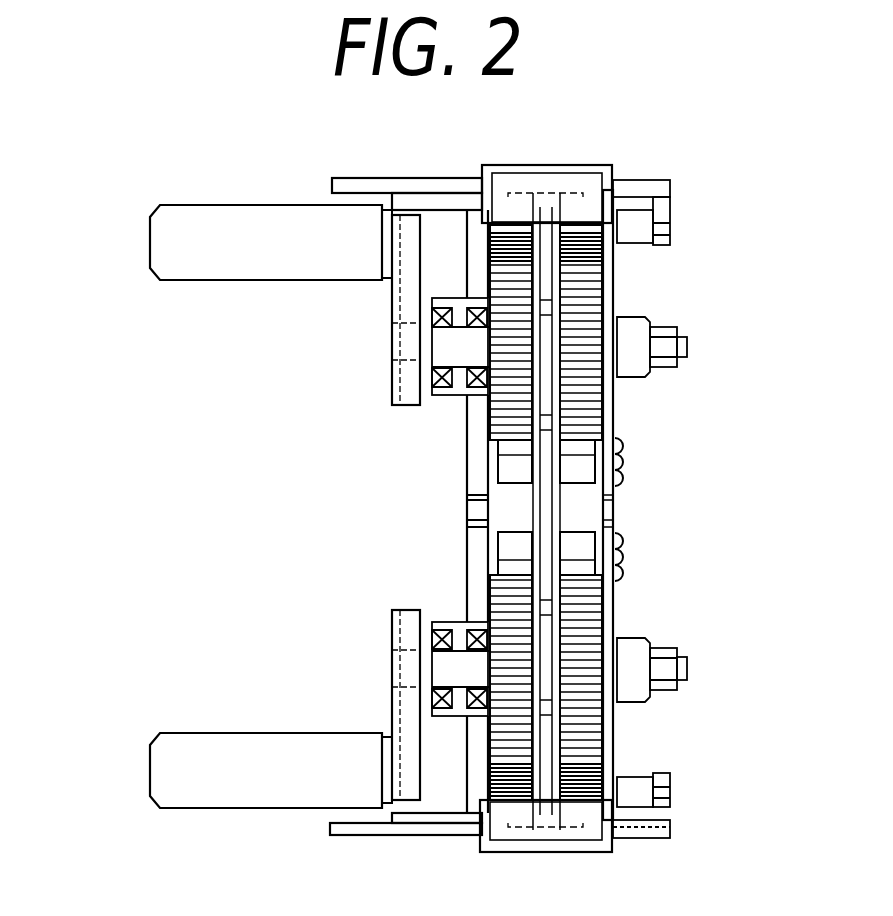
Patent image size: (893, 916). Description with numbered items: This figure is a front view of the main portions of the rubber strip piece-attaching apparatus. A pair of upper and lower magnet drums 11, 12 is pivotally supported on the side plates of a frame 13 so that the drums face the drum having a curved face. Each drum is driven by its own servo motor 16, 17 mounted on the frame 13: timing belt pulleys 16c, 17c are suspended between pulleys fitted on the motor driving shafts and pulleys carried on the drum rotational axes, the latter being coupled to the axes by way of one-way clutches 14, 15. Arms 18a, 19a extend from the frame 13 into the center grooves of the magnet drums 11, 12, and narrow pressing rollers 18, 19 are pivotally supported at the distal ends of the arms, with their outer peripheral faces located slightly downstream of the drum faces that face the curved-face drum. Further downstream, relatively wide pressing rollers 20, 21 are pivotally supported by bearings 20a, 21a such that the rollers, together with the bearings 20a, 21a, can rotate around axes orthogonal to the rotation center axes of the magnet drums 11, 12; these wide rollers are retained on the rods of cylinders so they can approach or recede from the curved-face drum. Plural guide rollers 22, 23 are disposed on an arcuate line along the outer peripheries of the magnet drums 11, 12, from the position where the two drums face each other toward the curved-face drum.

The upper magnet drum 11 is at (626, 332).
The lower magnet drum 12 is at (621, 687).
The frame 13 is at (620, 505).
The one-way clutch 14 is at (398, 383).
The one-way clutch 15 is at (400, 640).
The servo motor 16 is at (150, 243).
The timing belt pulley 16c is at (400, 298).
The servo motor 17 is at (150, 760).
The timing belt pulley 17c is at (400, 715).
The pressing roller 18 is at (560, 353).
The arm 18a is at (602, 275).
The pressing roller 19 is at (545, 632).
The arm 19a is at (605, 752).
The pressing roller 20 is at (588, 207).
The bearing 20a is at (610, 187).
The pressing roller 21 is at (617, 800).
The bearing 21a is at (640, 832).
The guide rollers 22 is at (583, 468).
The guide rollers 23 is at (503, 552).